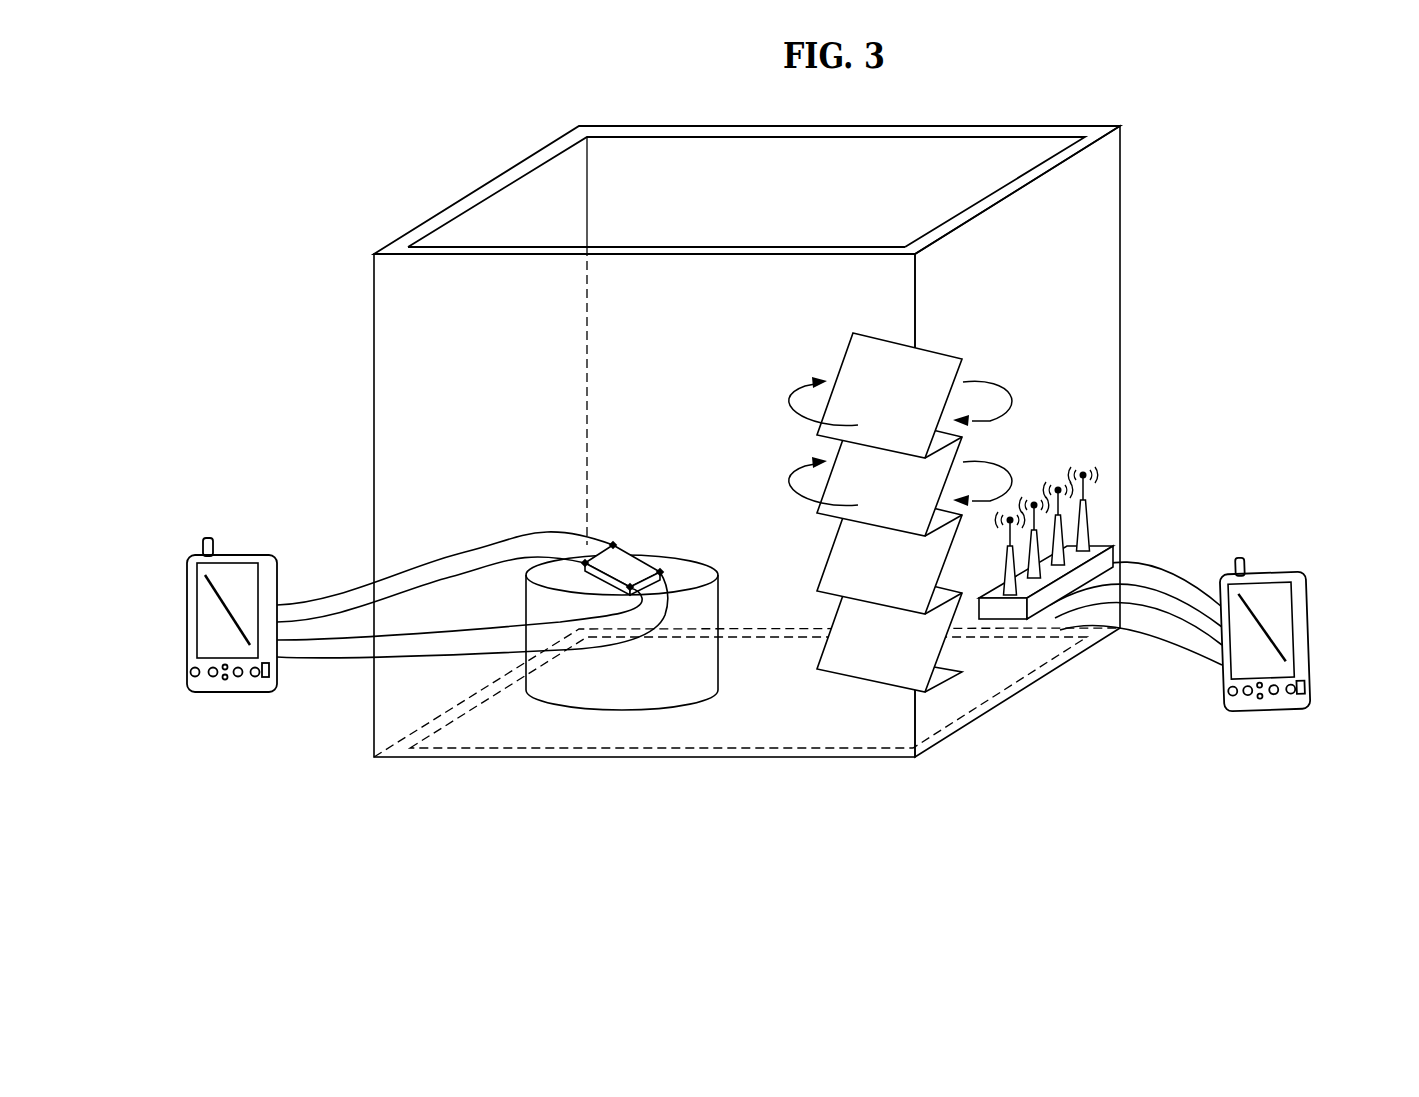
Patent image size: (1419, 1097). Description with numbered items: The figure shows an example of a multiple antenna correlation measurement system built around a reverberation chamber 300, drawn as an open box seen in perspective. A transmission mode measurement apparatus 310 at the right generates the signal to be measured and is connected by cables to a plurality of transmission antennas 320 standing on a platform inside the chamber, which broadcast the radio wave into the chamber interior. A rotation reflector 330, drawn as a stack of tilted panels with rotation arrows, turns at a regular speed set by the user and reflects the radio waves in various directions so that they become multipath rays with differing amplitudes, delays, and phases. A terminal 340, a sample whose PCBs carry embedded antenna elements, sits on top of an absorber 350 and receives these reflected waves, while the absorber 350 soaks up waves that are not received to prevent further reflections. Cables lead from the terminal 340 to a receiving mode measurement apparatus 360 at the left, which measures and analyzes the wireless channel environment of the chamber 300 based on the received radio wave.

The reverberation chamber 300 is at (1122, 228).
The transmission mode measurement apparatus 310 is at (1267, 577).
The transmission antennas 320 is at (1083, 512).
The rotation reflector 330 is at (938, 358).
The terminal 340 is at (629, 556).
The absorber 350 is at (620, 710).
The receiving mode measurement apparatus 360 is at (237, 557).